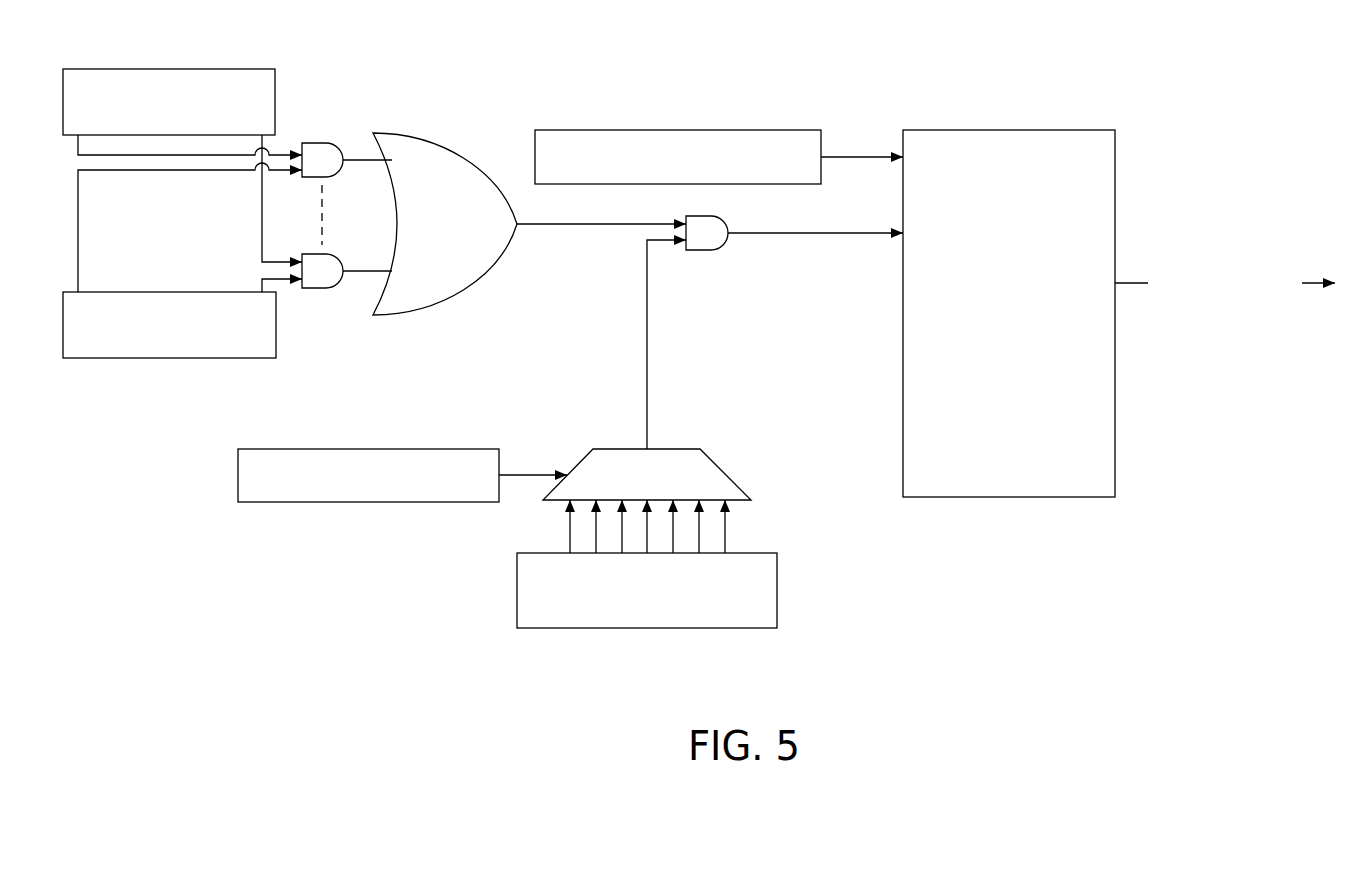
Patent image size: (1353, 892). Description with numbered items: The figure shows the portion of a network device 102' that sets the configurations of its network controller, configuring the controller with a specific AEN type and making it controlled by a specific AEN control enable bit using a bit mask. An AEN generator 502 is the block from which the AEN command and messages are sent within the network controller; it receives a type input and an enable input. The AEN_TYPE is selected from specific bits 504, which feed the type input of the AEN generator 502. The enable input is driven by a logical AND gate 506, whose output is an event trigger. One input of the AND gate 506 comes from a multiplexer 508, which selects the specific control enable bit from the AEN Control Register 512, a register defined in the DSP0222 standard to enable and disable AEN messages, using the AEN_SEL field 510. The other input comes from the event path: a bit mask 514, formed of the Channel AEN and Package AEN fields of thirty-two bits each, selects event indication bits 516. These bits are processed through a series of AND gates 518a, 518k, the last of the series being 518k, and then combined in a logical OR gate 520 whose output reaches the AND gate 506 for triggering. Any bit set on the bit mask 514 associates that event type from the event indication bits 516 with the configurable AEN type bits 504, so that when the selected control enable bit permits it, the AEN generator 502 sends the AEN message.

The network device 102' is at (699, 314).
The AEN generator 502 is at (1031, 418).
The AEN type bits 504 is at (815, 170).
The AND gate 506 is at (712, 252).
The multiplexer 508 is at (723, 467).
The AEN_SEL field 510 is at (494, 489).
The AEN Control Register 512 is at (668, 616).
The bit mask 514 is at (190, 127).
The event indication bits 516 is at (268, 351).
The AND gate 518a is at (328, 142).
The AND gate 518k is at (328, 289).
The OR gate 520 is at (467, 236).